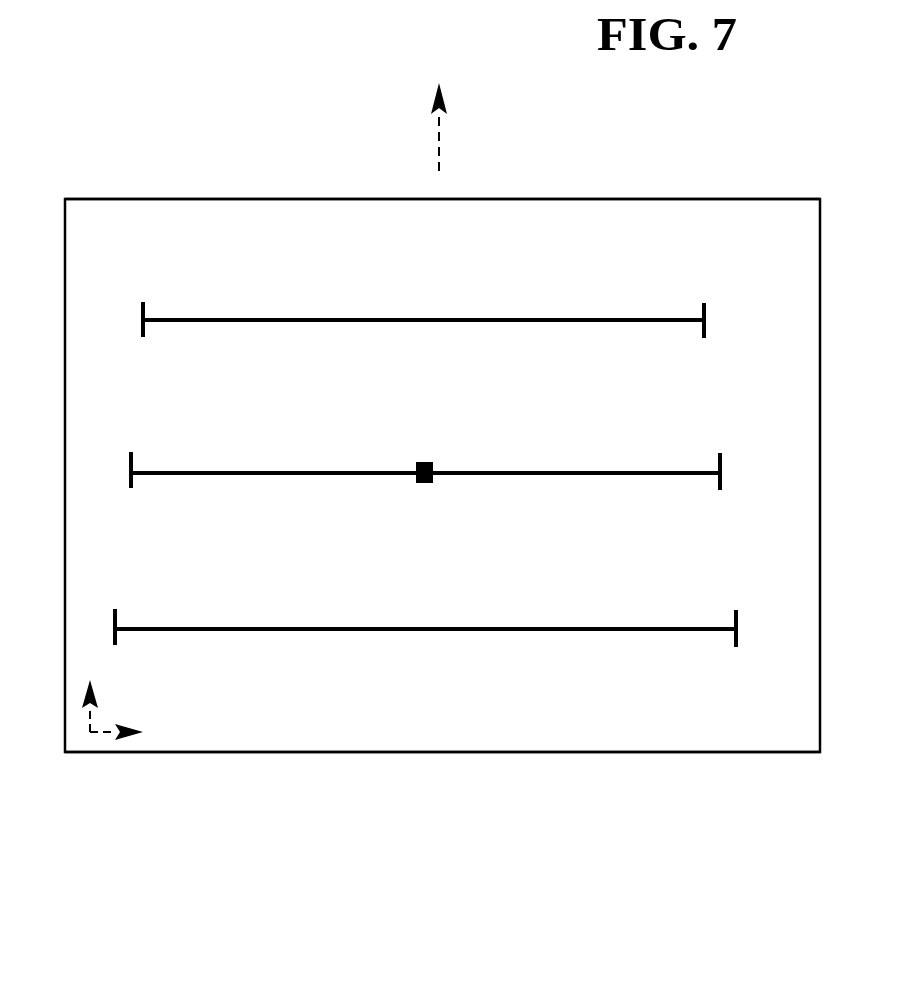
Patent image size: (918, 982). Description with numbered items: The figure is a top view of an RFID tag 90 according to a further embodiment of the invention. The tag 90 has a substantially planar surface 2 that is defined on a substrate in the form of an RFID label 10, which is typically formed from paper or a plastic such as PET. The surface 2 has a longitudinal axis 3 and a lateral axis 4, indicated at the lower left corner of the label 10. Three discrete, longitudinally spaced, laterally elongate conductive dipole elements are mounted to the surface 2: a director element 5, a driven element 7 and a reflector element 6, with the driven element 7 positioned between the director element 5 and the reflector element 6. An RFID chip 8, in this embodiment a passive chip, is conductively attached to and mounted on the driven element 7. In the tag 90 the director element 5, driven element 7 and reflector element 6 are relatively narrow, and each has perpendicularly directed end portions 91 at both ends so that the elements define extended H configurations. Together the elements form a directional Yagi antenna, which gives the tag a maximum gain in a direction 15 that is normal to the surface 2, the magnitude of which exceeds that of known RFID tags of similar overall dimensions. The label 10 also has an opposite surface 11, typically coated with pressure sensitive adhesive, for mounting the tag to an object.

The surface 2 is at (177, 207).
The longitudinal axis 3 is at (88, 720).
The lateral axis 4 is at (105, 735).
The director element 5 is at (465, 318).
The reflector element 6 is at (488, 628).
The driven element 7 is at (525, 470).
The RFID chip 8 is at (424, 484).
The RFID label 10 is at (590, 222).
The opposite surface 11 is at (468, 754).
The direction of maximum gain 15 is at (440, 140).
The tag 90 is at (303, 153).
The end portions 91 is at (145, 335).